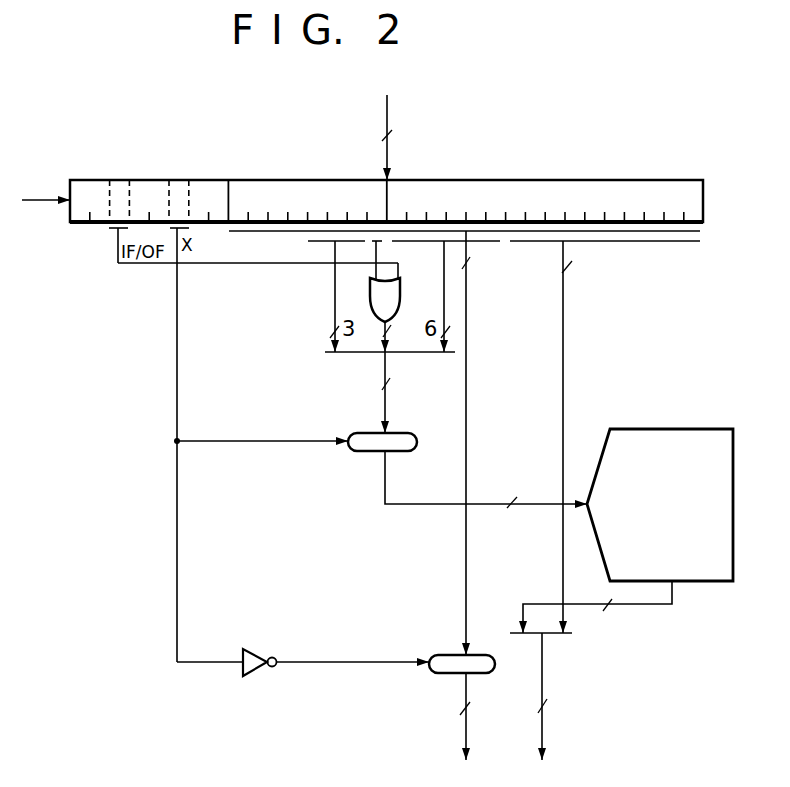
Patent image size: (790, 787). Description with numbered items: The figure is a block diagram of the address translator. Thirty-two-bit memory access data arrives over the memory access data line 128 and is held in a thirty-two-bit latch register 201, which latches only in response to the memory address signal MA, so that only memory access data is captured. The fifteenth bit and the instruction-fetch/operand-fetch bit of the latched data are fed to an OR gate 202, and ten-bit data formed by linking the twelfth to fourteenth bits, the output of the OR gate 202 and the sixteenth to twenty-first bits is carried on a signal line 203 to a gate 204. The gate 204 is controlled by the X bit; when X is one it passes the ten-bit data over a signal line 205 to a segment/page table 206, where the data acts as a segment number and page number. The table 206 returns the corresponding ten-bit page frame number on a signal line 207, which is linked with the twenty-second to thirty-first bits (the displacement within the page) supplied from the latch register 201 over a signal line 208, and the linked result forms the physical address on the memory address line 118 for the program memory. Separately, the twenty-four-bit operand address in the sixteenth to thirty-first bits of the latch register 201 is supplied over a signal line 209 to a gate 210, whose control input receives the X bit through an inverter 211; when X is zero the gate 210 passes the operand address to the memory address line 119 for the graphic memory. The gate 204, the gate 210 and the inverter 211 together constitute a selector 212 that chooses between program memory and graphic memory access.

The latch register 201 is at (78, 224).
The OR gate 202 is at (404, 292).
The signal line 203 is at (383, 404).
The gate 204 is at (362, 452).
The signal line 205 is at (420, 506).
The segment/page table 206 is at (672, 428).
The signal line 207 is at (660, 608).
The signal line 208 is at (566, 366).
The signal line 209 is at (468, 418).
The gate 210 is at (444, 653).
The inverter 211 is at (250, 648).
The selector 212 is at (323, 702).
The memory access data line 128 is at (385, 104).
The memory address line 118 is at (545, 660).
The memory address line 119 is at (462, 690).